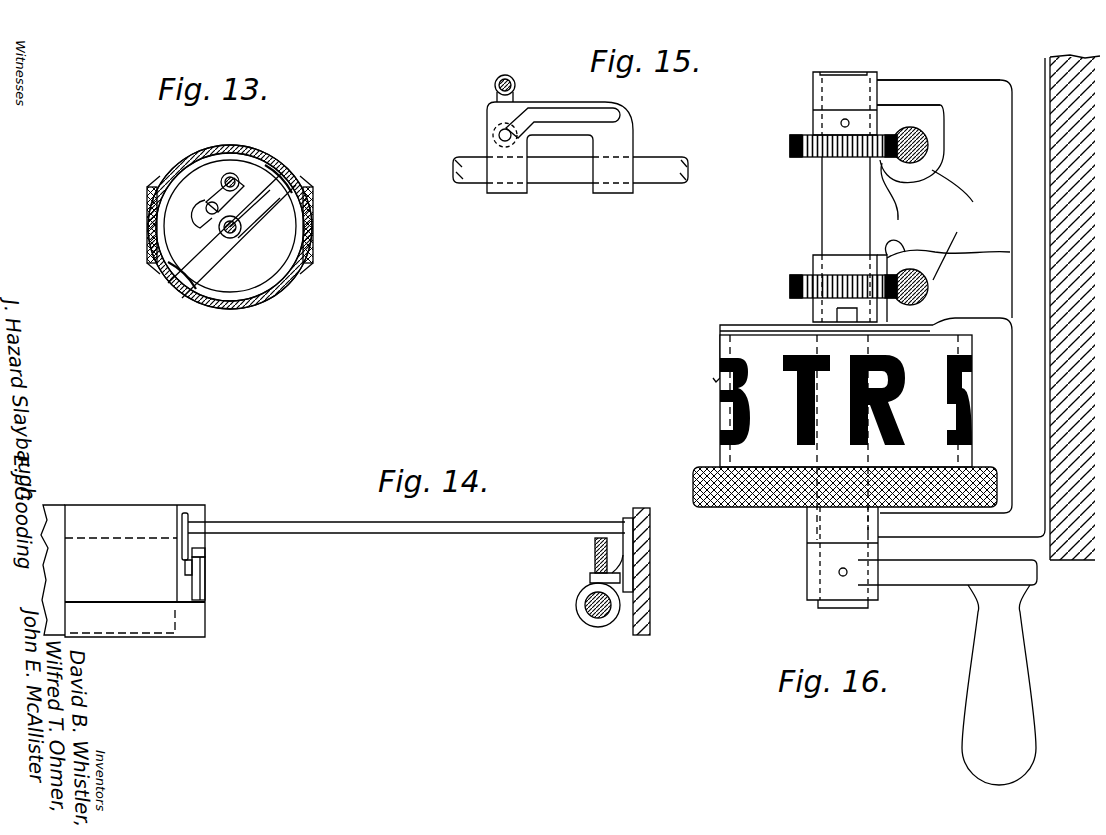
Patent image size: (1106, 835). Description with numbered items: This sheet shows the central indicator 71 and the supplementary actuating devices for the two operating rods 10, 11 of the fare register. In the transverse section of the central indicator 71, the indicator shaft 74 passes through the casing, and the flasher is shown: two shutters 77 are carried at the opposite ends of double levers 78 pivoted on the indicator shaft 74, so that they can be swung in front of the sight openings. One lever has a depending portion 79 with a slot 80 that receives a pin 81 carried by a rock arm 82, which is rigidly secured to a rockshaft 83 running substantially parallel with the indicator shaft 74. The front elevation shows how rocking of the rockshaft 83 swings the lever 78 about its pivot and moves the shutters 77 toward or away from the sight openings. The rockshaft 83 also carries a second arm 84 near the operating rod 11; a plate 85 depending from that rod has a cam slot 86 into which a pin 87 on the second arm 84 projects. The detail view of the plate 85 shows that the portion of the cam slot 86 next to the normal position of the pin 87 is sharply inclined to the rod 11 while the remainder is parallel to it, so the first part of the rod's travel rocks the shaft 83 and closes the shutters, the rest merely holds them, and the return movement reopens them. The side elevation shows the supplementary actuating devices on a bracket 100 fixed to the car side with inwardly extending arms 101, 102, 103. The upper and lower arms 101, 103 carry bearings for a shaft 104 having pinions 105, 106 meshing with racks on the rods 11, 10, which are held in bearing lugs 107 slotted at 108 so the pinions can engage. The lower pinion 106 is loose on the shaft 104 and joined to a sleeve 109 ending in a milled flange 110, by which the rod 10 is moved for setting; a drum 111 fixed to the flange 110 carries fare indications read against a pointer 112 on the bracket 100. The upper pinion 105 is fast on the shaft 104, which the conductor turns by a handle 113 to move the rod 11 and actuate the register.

In FIG. 16, the operating rod 10 is at (928, 288).
In FIG. 15, the operating rod 11 is at (668, 160).
In FIG. 14, the operating rod 11 is at (64, 565).
In FIG. 16, the operating rod 11 is at (928, 151).
In FIG. 13, the central indicator 71 is at (200, 298).
In FIG. 13, the indicator shaft 74 is at (232, 238).
In FIG. 13, the shutters 77 is at (276, 166).
In FIG. 14, the shutters 77 is at (55, 505).
In FIG. 13, the double levers 78 is at (262, 200).
In FIG. 14, the double levers 78 is at (206, 572).
In FIG. 13, the depending portion 79 is at (248, 220).
In FIG. 14, the depending portion 79 is at (206, 552).
In FIG. 13, the slot 80 is at (200, 226).
In FIG. 13, the pin 81 is at (206, 208).
In FIG. 14, the pin 81 is at (193, 548).
In FIG. 13, the rock arm 82 is at (218, 200).
In FIG. 14, the rock arm 82 is at (186, 512).
In FIG. 13, the rockshaft 83 is at (232, 172).
In FIG. 15, the rockshaft 83 is at (496, 80).
In FIG. 14, the rockshaft 83 is at (292, 522).
In FIG. 14, the second arm 84 is at (628, 517).
In FIG. 15, the plate 85 is at (628, 120).
In FIG. 15, the cam slot 86 is at (552, 112).
In FIG. 14, the cam slot 86 is at (595, 555).
In FIG. 15, the pin 87 is at (497, 134).
In FIG. 14, the pin 87 is at (626, 560).
In FIG. 16, the bracket 100 is at (1010, 190).
In FIG. 16, the upper arm 101 is at (952, 82).
In FIG. 16, the arm 102 is at (986, 262).
In FIG. 16, the lower arm 103 is at (960, 532).
In FIG. 16, the shaft 104 is at (830, 218).
In FIG. 16, the upper pinion 105 is at (792, 157).
In FIG. 16, the lower pinion 106 is at (790, 287).
In FIG. 16, the bearing lugs 107 is at (955, 225).
In FIG. 16, the slot 108 is at (898, 242).
In FIG. 16, the sleeve 109 is at (835, 326).
In FIG. 16, the milled flange 110 is at (762, 500).
In FIG. 16, the drum 111 is at (742, 438).
In FIG. 16, the pointer 112 is at (712, 358).
In FIG. 16, the handle 113 is at (962, 578).